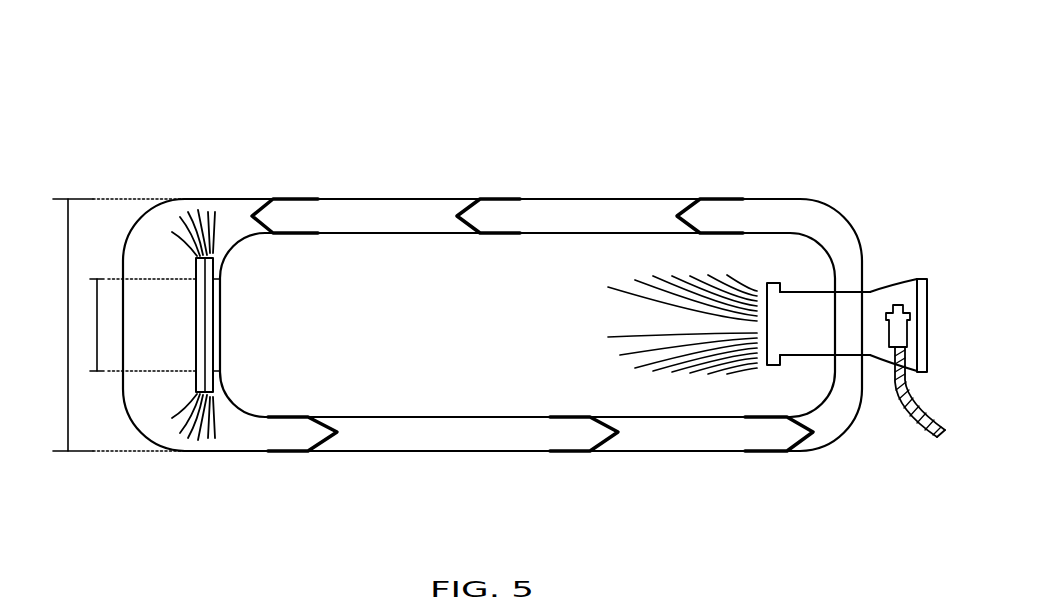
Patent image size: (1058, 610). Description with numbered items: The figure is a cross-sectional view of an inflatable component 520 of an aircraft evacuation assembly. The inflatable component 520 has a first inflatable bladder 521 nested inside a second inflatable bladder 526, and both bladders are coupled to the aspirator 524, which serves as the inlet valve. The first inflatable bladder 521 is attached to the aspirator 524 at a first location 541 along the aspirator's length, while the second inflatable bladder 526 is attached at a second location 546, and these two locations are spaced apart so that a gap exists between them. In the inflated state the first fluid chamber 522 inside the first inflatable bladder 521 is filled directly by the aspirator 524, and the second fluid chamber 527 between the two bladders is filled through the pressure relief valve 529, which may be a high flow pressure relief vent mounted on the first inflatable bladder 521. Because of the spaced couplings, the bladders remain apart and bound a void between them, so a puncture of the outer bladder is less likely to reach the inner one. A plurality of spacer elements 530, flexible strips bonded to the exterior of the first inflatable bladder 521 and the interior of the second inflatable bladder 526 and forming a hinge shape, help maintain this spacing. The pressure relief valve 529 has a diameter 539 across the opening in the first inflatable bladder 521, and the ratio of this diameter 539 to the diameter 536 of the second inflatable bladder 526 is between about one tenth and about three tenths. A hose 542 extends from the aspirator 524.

The inflatable component 520 is at (474, 237).
The first inflatable bladder 521 is at (343, 232).
The first fluid chamber 522 is at (394, 260).
The aspirator 524 is at (877, 297).
The second inflatable bladder 526 is at (573, 198).
The second fluid chamber 527 is at (645, 210).
The pressure relief valve 529 is at (176, 401).
The spacer elements 530 is at (273, 200).
The diameter of the second inflatable bladder 536 is at (68, 199).
The diameter 539 is at (97, 352).
The first location 541 is at (830, 293).
The hose 542 is at (895, 405).
The second location 546 is at (862, 293).